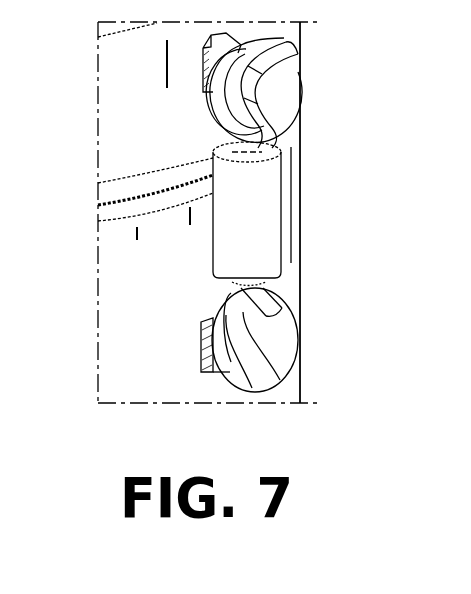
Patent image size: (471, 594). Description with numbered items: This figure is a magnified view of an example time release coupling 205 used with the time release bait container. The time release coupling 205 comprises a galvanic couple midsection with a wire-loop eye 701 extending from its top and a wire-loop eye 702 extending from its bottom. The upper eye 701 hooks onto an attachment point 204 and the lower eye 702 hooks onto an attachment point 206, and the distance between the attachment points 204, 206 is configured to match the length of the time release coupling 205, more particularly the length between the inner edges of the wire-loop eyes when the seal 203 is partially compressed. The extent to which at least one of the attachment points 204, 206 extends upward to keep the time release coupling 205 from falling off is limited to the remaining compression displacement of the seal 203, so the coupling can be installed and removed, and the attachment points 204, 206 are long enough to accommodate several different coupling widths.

The seal 203 is at (103, 200).
The attachment point 204 is at (283, 42).
The wire-loop eye 701 is at (255, 106).
The time release coupling 205 is at (263, 213).
The wire-loop eye 702 is at (276, 304).
The attachment point 206 is at (275, 357).